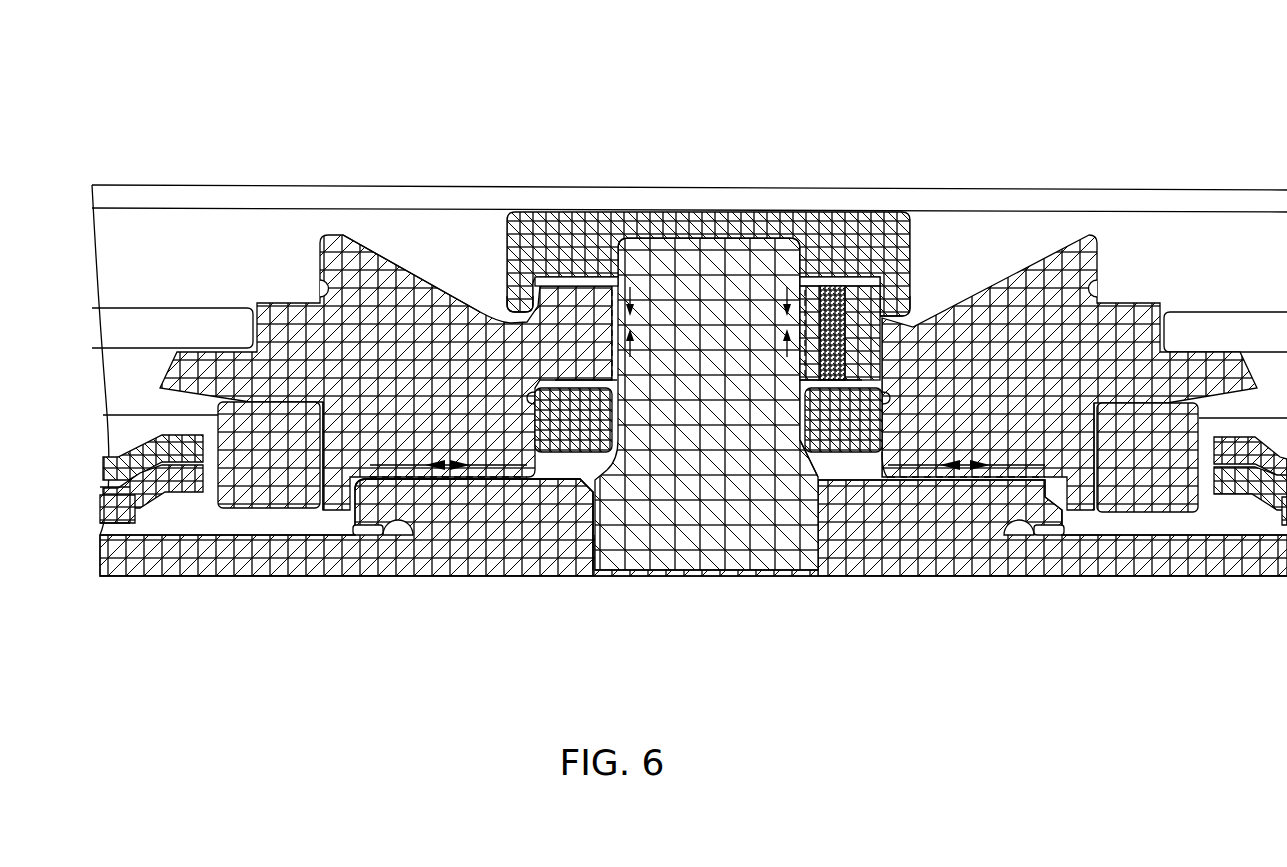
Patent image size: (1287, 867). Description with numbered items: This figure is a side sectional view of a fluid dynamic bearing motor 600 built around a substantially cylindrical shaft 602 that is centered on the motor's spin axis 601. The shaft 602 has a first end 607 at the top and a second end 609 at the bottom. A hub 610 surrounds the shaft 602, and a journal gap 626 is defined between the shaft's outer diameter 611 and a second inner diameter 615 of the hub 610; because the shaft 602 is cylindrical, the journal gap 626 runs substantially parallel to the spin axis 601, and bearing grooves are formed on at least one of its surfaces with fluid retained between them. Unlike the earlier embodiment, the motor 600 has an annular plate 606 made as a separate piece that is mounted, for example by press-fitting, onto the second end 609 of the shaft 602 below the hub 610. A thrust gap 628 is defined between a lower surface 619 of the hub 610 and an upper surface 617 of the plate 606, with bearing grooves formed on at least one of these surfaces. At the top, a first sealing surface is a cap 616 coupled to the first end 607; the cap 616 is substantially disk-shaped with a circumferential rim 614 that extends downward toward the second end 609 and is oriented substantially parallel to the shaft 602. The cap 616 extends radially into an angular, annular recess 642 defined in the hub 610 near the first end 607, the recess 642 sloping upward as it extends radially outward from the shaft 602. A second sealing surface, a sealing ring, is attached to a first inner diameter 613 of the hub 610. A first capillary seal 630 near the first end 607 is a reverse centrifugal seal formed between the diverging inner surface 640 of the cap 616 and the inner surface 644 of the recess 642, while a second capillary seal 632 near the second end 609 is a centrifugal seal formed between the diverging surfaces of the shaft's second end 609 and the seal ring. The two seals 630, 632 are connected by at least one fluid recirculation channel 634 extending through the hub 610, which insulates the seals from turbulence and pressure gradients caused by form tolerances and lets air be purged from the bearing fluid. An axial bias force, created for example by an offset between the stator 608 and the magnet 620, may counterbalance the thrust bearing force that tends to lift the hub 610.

The fluid dynamic bearing motor 600 is at (343, 85).
The spin axis 601 is at (707, 593).
The shaft 602 is at (687, 360).
The annular plate 606 is at (866, 543).
The first end of the shaft 607 is at (755, 250).
The stator 608 is at (150, 493).
The second end of the shaft 609 is at (805, 540).
The hub 610 is at (957, 396).
The outer diameter of the shaft 611 is at (735, 520).
The first inner diameter of the hub 613 is at (878, 445).
The circumferential rim 614 is at (905, 260).
The second inner diameter of the hub 615 is at (805, 322).
The cap 616 is at (829, 256).
The upper surface of the plate 617 is at (503, 480).
The lower surface of the hub 619 is at (405, 457).
The magnet 620 is at (263, 457).
The journal gap 626 is at (795, 360).
The thrust gap 628 is at (392, 528).
The first capillary seal 630 is at (527, 318).
The second capillary seal 632 is at (618, 395).
The fluid recirculation channel 634 is at (825, 293).
The inner surface of the cap 640 is at (582, 282).
The angular annular recess 642 is at (476, 270).
The inner surface of the recess 644 is at (497, 337).